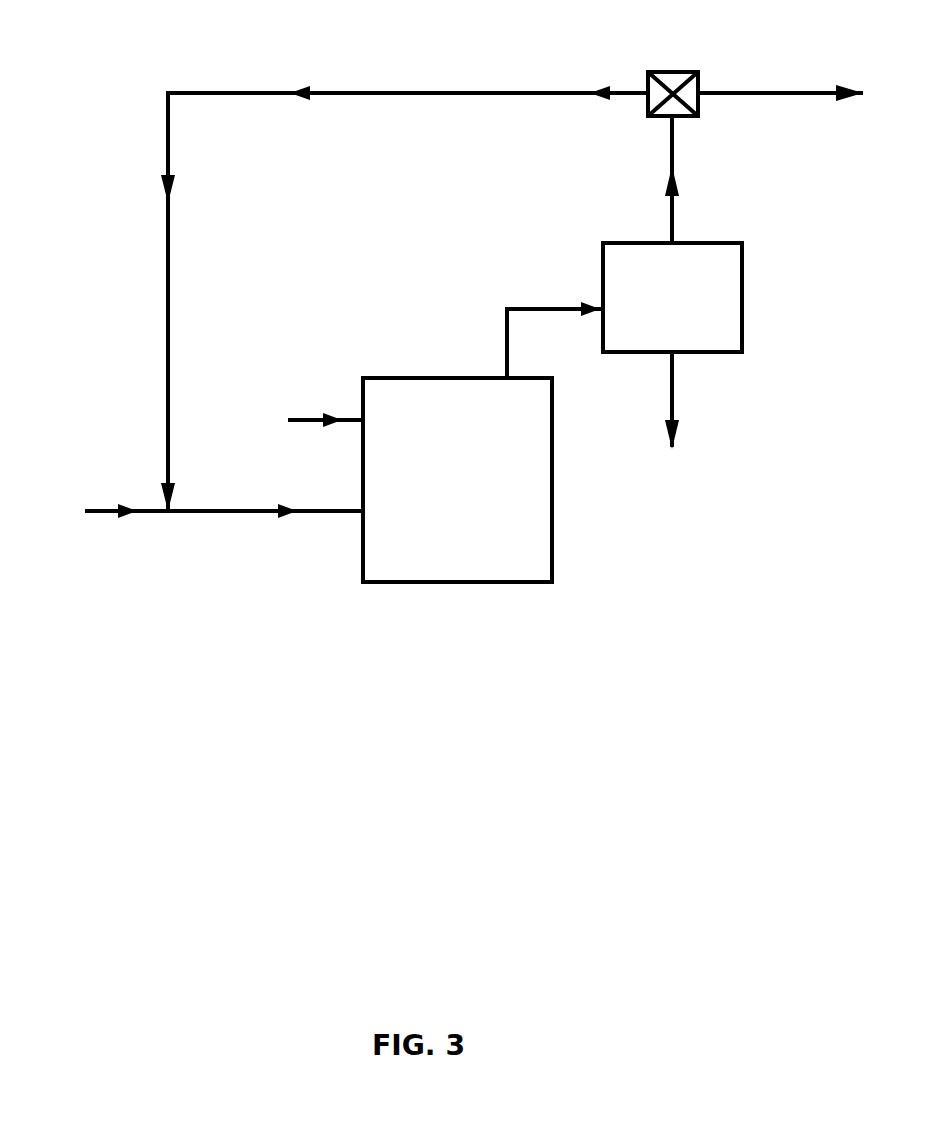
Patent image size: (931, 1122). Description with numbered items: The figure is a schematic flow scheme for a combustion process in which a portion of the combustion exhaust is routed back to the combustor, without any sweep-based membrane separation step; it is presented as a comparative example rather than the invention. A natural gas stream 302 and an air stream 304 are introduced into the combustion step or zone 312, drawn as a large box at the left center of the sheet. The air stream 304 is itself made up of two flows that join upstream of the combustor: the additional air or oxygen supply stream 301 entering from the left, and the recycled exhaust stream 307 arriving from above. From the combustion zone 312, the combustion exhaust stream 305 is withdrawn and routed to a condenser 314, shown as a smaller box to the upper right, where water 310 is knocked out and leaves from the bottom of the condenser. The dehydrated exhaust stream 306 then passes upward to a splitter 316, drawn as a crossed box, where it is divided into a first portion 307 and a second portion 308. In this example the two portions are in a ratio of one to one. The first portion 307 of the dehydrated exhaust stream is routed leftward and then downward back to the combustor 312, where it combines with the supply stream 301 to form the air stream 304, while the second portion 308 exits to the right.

The additional air or oxygen supply stream 301 is at (99, 512).
The natural gas stream 302 is at (296, 421).
The air stream 304 is at (265, 496).
The combustion exhaust stream 305 is at (555, 327).
The dehydrated exhaust stream 306 is at (698, 180).
The first portion 307 is at (404, 284).
The second portion 308 is at (780, 79).
The water 310 is at (671, 420).
The combustion step or zone 312 is at (407, 378).
The condenser 314 is at (742, 297).
The splitter 316 is at (663, 72).